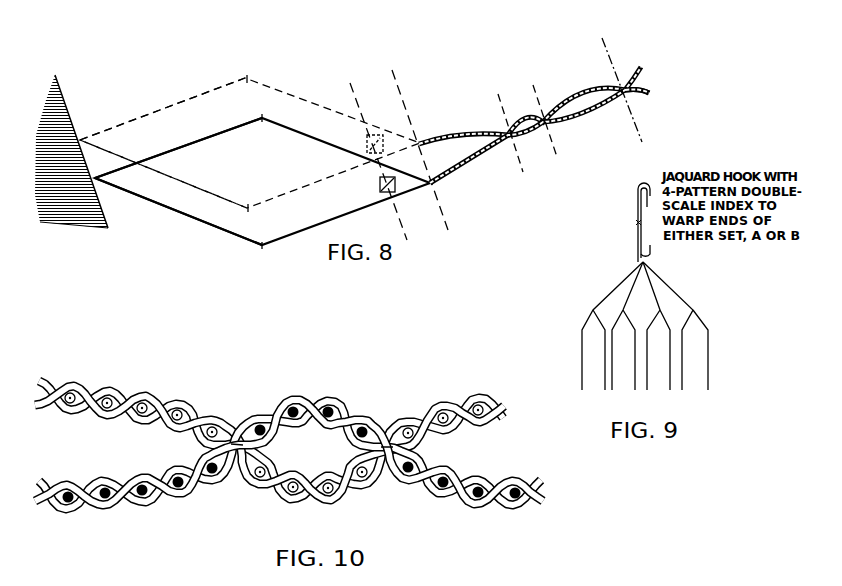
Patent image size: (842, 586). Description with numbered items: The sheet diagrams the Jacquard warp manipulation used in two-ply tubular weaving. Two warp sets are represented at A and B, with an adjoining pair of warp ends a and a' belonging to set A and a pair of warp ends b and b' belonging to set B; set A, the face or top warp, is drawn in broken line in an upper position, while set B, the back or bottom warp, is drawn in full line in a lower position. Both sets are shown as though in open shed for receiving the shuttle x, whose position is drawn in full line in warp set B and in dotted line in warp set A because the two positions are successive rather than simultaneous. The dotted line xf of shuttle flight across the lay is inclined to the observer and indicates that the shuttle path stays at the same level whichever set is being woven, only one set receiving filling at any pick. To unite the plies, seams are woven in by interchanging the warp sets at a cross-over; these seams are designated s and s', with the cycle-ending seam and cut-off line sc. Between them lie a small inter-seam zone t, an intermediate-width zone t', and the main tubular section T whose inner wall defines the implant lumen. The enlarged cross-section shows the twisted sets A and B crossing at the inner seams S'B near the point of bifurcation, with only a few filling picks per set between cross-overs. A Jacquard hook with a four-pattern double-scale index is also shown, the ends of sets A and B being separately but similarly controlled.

In FIG. 8, the warp set A is at (246, 79).
In FIG. 10, the warp set A is at (127, 393).
In FIG. 8, the warp set B is at (262, 246).
In FIG. 10, the warp set B is at (112, 513).
In FIG. 8, the warp end a is at (162, 109).
In FIG. 8, the warp end a' is at (163, 169).
In FIG. 8, the warp end b is at (178, 157).
In FIG. 8, the warp end b' is at (178, 212).
In FIG. 8, the line of shuttle flight xf is at (353, 92).
In FIG. 8, the shuttle x is at (380, 187).
In FIG. 8, the main tubular section T is at (463, 132).
In FIG. 8, the inter-seam zone t is at (535, 125).
In FIG. 8, the intermediate-width inter-seam zone t' is at (627, 94).
In FIG. 8, the seam s is at (510, 114).
In FIG. 8, the seam s' is at (545, 96).
In FIG. 8, the cut-line seam sc is at (603, 53).
In FIG. 10, the inner seam S'B is at (325, 415).